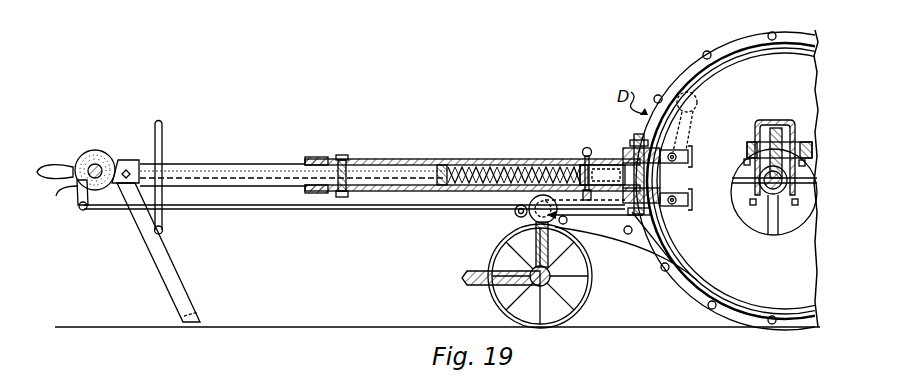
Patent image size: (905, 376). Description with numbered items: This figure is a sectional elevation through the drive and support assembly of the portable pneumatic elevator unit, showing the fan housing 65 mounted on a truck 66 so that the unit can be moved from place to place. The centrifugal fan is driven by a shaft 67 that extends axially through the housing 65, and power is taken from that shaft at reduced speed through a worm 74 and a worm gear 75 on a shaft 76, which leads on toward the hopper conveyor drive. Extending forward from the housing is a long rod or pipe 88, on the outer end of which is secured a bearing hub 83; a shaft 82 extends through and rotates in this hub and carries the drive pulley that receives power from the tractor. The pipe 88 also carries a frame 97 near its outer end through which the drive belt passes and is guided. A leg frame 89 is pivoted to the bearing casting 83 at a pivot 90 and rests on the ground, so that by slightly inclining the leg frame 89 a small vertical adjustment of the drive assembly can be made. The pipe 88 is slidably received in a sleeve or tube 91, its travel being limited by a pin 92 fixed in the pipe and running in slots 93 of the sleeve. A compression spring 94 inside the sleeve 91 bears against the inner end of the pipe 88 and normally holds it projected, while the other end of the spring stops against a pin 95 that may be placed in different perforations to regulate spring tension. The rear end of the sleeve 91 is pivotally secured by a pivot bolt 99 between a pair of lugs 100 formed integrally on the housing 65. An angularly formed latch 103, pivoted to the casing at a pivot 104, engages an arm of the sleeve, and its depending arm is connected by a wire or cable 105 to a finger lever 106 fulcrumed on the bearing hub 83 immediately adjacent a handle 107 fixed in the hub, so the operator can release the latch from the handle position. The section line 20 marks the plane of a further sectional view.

The section line 20- 20 is at (208, 330).
The fan housing 65 is at (765, 295).
The truck 66 is at (593, 305).
The shaft 67 is at (768, 196).
The worm 74 is at (756, 210).
The worm gear 75 is at (778, 122).
The shaft 76 is at (810, 150).
The shaft 82 is at (102, 163).
The bearing hub 83 is at (92, 150).
The rod or pipe 88 is at (237, 172).
The leg frame 89 is at (168, 271).
The pivot 90 is at (128, 166).
The sleeve or tube 91 is at (310, 157).
The pin 92 is at (342, 155).
The slots 93 is at (472, 155).
The compression spring 94 is at (487, 170).
The pin 95 is at (586, 148).
The frame 97 is at (162, 143).
The pivot bolt 99 is at (634, 147).
The lugs 100 is at (701, 170).
The latch 103 is at (607, 186).
The pivot 104 is at (686, 122).
The wire or cable 105 is at (395, 210).
The finger lever 106 is at (84, 209).
The handle 107 is at (52, 182).